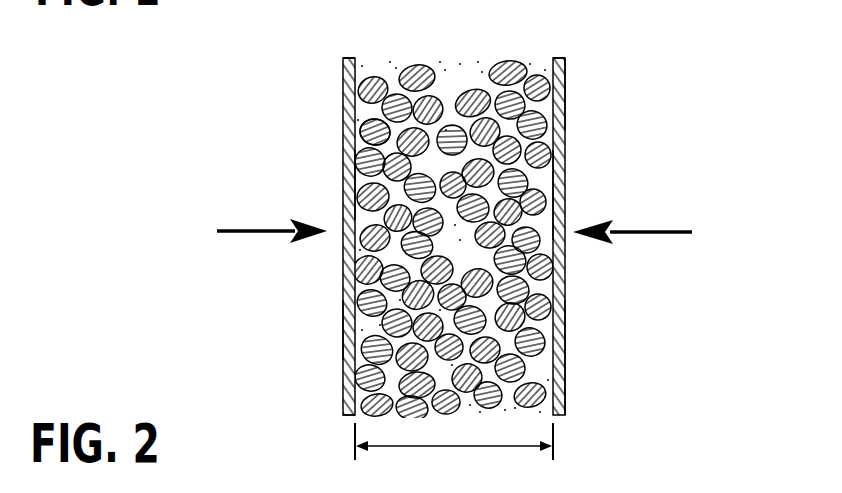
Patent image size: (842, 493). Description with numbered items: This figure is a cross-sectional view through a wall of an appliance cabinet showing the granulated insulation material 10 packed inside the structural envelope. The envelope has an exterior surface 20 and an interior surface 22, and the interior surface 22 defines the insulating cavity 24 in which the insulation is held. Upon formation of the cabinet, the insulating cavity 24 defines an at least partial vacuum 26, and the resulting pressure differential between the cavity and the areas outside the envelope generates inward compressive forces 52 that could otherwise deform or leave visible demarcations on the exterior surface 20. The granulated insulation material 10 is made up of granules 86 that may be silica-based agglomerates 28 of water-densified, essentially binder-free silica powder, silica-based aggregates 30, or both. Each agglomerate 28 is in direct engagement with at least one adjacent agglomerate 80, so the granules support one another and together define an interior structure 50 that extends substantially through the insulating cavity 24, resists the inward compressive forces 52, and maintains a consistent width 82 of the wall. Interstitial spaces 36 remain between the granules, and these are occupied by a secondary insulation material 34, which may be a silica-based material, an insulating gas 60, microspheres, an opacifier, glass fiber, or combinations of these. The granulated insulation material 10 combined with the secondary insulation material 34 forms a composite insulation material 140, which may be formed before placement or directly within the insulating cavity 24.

The granulated insulation material 10 is at (536, 41).
The exterior surface 20 is at (565, 127).
The interior surface 22 is at (365, 73).
The insulating cavity 24 is at (346, 422).
The at least partial vacuum 26 is at (560, 176).
The silica-based agglomerates 28 is at (358, 247).
The silica-based aggregates 30 is at (565, 97).
The secondary insulation material 34 is at (565, 325).
The interstitial spaces 36 is at (565, 368).
The interior structure 50 is at (456, 48).
The inward compressive forces 52 is at (640, 237).
The insulating gas 60 is at (356, 184).
The adjacent agglomerate 80 is at (355, 324).
The width 82 is at (553, 436).
The granules 86 is at (376, 128).
The composite insulation material 140 is at (560, 212).